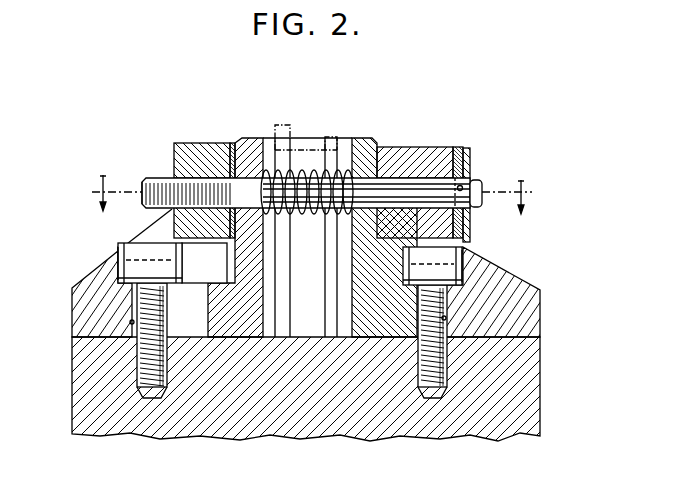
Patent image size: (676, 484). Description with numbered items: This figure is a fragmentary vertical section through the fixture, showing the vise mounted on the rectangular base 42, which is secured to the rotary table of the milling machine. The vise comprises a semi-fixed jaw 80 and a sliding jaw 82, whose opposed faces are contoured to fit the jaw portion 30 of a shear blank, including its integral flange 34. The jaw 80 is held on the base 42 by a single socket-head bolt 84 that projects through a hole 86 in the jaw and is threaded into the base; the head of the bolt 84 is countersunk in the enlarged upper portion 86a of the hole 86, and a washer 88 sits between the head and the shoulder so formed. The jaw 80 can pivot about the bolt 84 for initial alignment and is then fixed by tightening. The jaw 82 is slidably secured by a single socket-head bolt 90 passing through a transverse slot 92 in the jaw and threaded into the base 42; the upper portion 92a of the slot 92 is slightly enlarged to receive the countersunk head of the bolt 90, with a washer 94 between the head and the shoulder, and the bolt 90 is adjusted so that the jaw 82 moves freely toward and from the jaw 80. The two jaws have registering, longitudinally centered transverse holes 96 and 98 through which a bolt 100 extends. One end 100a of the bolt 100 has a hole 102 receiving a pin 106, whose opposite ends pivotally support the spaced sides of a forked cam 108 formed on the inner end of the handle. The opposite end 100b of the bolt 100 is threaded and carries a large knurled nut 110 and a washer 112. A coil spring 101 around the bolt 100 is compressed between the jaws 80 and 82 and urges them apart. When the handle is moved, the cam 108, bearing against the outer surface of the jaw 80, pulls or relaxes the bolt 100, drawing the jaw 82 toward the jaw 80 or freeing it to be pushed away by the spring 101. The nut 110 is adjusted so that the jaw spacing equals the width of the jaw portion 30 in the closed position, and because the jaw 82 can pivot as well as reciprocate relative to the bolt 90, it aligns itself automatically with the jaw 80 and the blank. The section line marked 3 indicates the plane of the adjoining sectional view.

The base 42 is at (541, 381).
The semi-fixed jaw 80 is at (541, 297).
The sliding jaw 82 is at (74, 302).
The socket-head bolt 84 is at (463, 246).
The hole 86 is at (446, 318).
The enlarged upper portion of hole 86a is at (463, 270).
The washer 88 is at (462, 284).
The socket-head bolt 90 is at (138, 243).
The transverse slot 92 is at (130, 322).
The upper portion of slot 92a is at (118, 262).
The washer 94 is at (185, 279).
The transverse hole 96 is at (358, 180).
The transverse hole 98 is at (247, 170).
The bolt 100 is at (302, 172).
The end of bolt 100a is at (483, 190).
The opposite end of bolt 100b is at (142, 190).
The coil spring 101 is at (307, 217).
The hole 102 is at (464, 187).
The pin 106 is at (458, 147).
The forked cam 108 is at (400, 147).
The knurled nut 110 is at (196, 143).
The washer 112 is at (233, 143).
The jaw portion 30 is at (318, 128).
The flange 34 is at (282, 124).
The section line 3- 3 is at (310, 195).